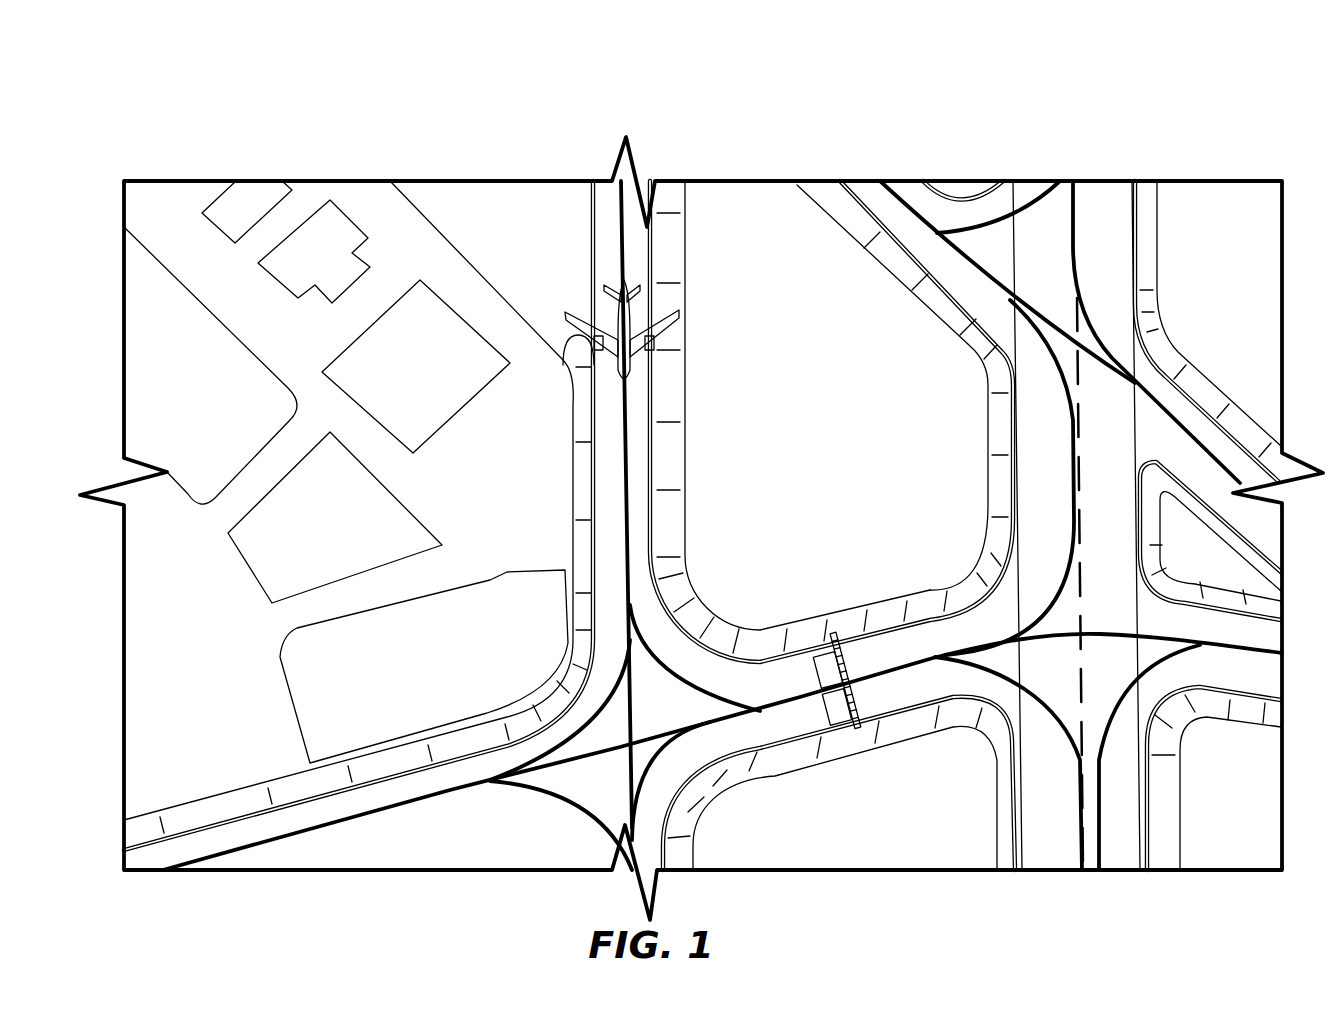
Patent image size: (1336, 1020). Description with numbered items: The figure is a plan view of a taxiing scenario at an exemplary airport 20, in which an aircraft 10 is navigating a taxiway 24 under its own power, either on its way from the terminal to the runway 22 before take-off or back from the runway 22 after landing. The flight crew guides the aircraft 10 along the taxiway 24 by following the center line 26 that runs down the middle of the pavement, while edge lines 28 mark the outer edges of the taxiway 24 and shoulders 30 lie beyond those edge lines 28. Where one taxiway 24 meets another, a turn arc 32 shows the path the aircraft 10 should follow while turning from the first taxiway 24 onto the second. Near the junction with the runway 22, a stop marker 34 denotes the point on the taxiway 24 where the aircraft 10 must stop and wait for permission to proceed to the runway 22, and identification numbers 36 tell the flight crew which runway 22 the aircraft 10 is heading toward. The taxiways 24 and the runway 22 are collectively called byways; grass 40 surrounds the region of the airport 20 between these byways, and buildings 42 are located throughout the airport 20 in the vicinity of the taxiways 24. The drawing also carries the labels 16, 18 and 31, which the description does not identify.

The aircraft 10 is at (620, 312).
The airport environment 16 is at (285, 165).
The runway 18 is at (1097, 450).
The airport 20 is at (1080, 543).
The runway 22 is at (1197, 390).
The taxiway 24 is at (640, 410).
The center line 26 is at (628, 450).
The edge line 28 is at (655, 467).
The shoulder 30 is at (675, 523).
The shoulder markings 31 is at (672, 555).
The turn arc 32 is at (653, 647).
The stop marker 34 is at (862, 703).
The identification numbers 36 is at (827, 703).
The grass 40 is at (848, 318).
The buildings 42 is at (422, 338).